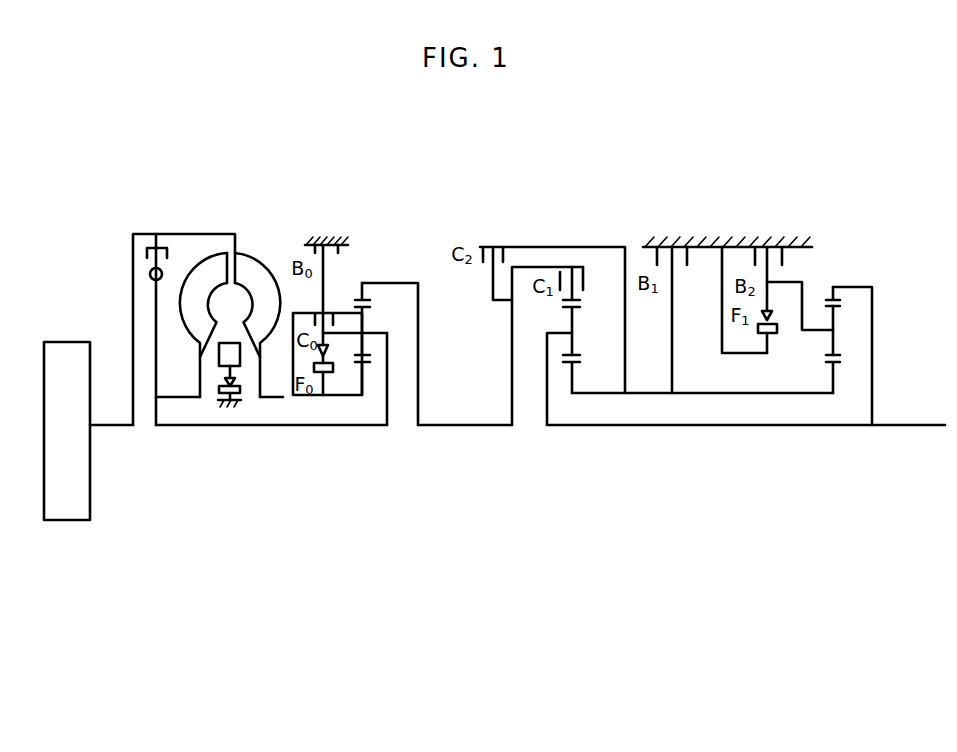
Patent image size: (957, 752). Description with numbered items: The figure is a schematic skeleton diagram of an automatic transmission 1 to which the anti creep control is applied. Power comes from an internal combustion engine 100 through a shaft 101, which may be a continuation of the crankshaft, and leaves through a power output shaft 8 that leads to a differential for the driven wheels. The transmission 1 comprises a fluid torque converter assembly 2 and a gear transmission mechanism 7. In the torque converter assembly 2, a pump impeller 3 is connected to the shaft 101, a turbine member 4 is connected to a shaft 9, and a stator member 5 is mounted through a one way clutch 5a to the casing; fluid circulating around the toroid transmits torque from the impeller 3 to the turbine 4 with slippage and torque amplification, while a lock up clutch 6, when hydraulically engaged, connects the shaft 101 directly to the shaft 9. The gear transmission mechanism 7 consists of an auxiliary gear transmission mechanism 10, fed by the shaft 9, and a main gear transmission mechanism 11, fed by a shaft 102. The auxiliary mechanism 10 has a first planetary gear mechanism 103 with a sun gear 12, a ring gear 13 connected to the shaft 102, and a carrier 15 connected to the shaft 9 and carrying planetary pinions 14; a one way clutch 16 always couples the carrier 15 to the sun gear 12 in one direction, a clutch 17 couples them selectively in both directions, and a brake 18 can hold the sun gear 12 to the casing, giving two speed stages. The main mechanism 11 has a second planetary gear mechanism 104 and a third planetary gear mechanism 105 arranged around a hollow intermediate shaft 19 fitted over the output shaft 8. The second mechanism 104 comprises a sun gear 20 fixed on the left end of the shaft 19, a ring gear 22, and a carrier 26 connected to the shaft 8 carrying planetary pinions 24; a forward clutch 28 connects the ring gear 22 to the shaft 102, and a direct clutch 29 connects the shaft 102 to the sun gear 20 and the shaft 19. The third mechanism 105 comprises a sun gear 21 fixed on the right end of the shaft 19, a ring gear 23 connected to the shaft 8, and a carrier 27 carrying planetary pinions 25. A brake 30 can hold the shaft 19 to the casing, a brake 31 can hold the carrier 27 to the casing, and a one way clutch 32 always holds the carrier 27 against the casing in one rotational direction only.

The automatic transmission 1 is at (897, 548).
The fluid torque converter assembly 2 is at (137, 448).
The pump impeller 3 is at (252, 273).
The turbine member 4 is at (193, 329).
The stator member 5 is at (220, 356).
The one way clutch 5a is at (248, 392).
The lock up clutch 6 is at (158, 323).
The gear transmission mechanism 7 is at (900, 484).
The power output shaft 8 is at (922, 424).
The shaft 9 is at (313, 428).
The auxiliary gear transmission mechanism 10 is at (402, 448).
The main gear transmission mechanism 11 is at (897, 440).
The sun gear 12 is at (372, 363).
The ring gear 13 is at (356, 300).
The planetary pinions 14 is at (371, 305).
The carrier 15 is at (387, 363).
The one way clutch F0 16 is at (334, 369).
The clutch C0 17 is at (317, 309).
The brake B0 18 is at (326, 227).
The hollow intermediate shaft 19 is at (688, 394).
The sun gear 20 is at (581, 362).
The sun gear 21 is at (838, 362).
The ring gear 22 is at (582, 304).
The ring gear 23 is at (842, 300).
The planetary pinions 24 is at (573, 343).
The planetary pinions 25 is at (835, 347).
The carrier 26 is at (548, 334).
The carrier 27 is at (804, 312).
The clutch C1 28 is at (577, 266).
The clutch C2 29 is at (490, 244).
The brake B1 30 is at (680, 251).
The brake B2 31 is at (784, 257).
The one-way clutch F1 support 32 is at (757, 331).
The internal combustion engine 100 is at (72, 520).
The shaft 101 is at (121, 424).
The shaft 102 is at (471, 424).
The first planetary gear mechanism 103 is at (376, 281).
The second planetary gear mechanism 104 is at (598, 245).
The third planetary gear mechanism 105 is at (845, 281).